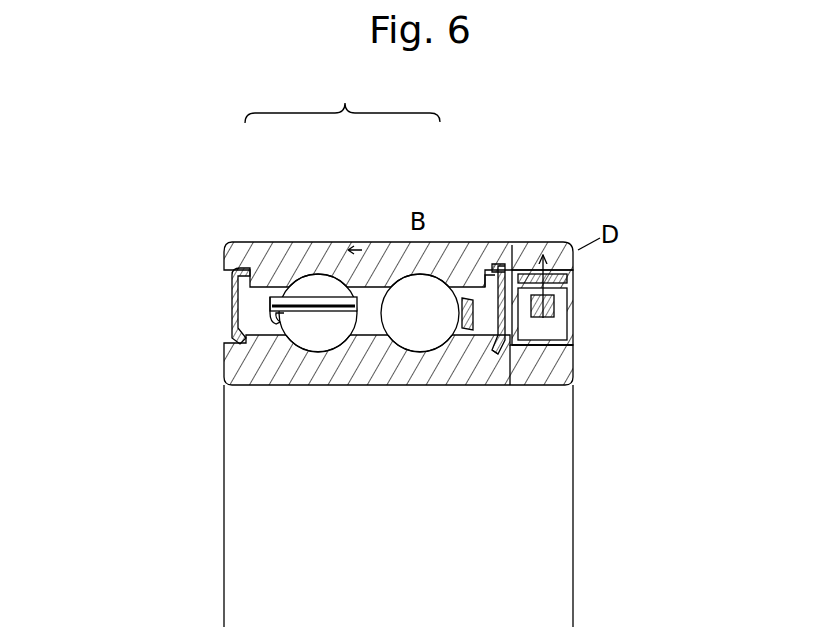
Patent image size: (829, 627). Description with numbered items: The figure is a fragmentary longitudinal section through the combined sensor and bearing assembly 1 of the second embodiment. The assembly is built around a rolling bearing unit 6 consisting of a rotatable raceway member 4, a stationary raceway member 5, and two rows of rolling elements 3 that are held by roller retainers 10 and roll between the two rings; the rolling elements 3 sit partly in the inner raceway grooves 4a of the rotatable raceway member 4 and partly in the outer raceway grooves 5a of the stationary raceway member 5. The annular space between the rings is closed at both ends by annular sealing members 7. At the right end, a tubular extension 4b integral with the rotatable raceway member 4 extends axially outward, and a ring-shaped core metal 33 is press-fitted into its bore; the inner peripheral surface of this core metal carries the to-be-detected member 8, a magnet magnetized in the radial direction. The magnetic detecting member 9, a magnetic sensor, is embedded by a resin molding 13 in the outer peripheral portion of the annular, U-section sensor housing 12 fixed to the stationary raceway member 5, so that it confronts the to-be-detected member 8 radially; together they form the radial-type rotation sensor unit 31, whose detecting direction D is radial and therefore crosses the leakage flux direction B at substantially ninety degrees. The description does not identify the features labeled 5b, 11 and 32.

The combined sensor and bearing assembly 1 is at (195, 182).
The rolling elements 3 is at (318, 283).
The rotatable raceway member 4 is at (263, 256).
The inner raceway grooves 4a is at (282, 283).
The tubular extension 4b is at (550, 250).
The stationary raceway member 5 is at (250, 375).
The outer raceway grooves 5a is at (312, 352).
The inner ring end portion 5b is at (558, 367).
The rolling bearing unit 6 is at (342, 96).
The annular sealing members 7 is at (232, 300).
The to-be-detected member 8 is at (573, 276).
The magnetic detecting member 9 is at (573, 305).
The roller retainers 10 is at (268, 300).
The seal groove 11 is at (498, 262).
The sensor housing 12 is at (575, 343).
The resin molding 13 is at (573, 327).
The rotation sensor unit 31 is at (648, 258).
The seal lip 32 is at (507, 358).
The ring-shaped core metal 33 is at (573, 257).